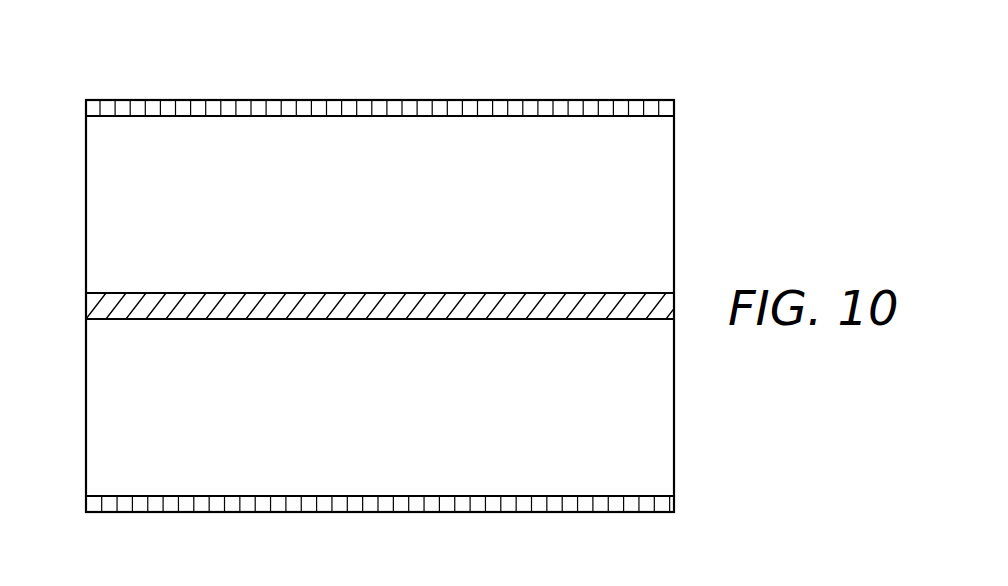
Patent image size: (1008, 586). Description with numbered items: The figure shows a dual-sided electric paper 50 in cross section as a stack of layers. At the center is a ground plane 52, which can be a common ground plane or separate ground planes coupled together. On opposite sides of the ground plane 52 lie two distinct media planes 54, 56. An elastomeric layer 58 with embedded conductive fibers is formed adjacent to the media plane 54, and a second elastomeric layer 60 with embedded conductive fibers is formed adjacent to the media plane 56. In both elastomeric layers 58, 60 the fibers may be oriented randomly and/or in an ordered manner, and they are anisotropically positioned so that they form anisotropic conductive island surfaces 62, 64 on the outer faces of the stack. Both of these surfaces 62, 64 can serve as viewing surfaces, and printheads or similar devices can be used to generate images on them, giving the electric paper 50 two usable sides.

The dual-sided electric paper 50 is at (393, 58).
The ground plane 52 is at (95, 305).
The media plane 54 is at (393, 215).
The media plane 56 is at (393, 421).
The elastomeric layer 58 is at (93, 109).
The elastomeric layer 60 is at (90, 505).
The anisotropic conductive island surface 62 is at (612, 101).
The anisotropic conductive island surface 64 is at (615, 511).